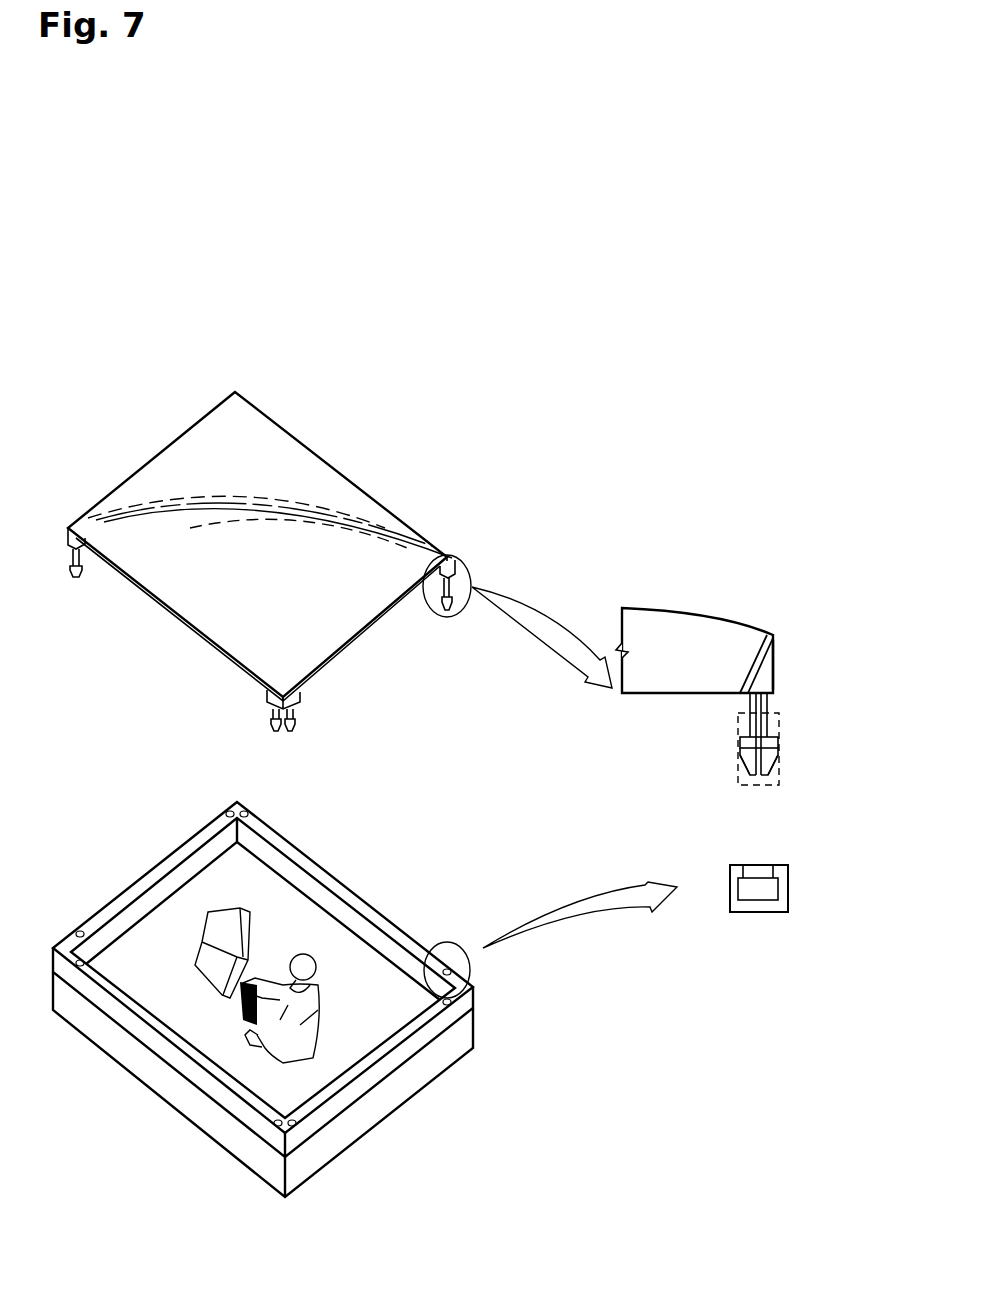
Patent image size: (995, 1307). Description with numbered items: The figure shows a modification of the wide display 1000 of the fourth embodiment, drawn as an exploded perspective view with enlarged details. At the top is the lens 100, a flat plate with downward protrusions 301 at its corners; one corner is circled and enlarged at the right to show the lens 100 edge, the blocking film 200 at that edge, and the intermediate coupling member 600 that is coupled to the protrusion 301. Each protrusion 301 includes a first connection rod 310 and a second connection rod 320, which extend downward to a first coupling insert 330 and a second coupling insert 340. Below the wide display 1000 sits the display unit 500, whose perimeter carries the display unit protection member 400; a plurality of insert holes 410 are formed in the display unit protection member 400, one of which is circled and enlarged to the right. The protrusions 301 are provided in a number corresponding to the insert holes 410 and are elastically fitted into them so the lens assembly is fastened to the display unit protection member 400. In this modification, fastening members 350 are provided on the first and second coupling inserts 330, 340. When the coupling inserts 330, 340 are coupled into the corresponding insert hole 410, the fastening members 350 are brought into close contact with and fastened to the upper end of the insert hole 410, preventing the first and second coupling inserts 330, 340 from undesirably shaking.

The wide display 1000 is at (122, 143).
The lens 100 is at (308, 465).
The blocking film 200 is at (760, 640).
The intermediate coupling member 600 is at (777, 655).
The protrusion 301 is at (727, 748).
The first connection rod 310 is at (747, 708).
The second connection rod 320 is at (773, 720).
The first coupling insert 330 is at (743, 770).
The second coupling insert 340 is at (773, 770).
The fastening member 350 is at (780, 748).
The display unit protection member 400 is at (398, 938).
The insert hole 410 is at (728, 912).
The display unit 500 is at (475, 1030).